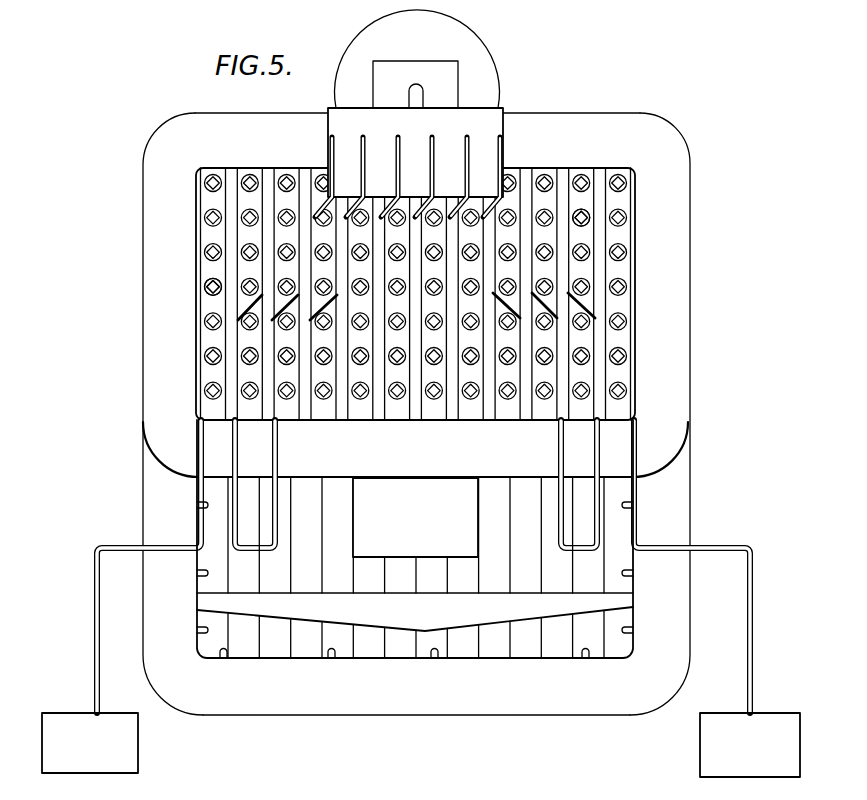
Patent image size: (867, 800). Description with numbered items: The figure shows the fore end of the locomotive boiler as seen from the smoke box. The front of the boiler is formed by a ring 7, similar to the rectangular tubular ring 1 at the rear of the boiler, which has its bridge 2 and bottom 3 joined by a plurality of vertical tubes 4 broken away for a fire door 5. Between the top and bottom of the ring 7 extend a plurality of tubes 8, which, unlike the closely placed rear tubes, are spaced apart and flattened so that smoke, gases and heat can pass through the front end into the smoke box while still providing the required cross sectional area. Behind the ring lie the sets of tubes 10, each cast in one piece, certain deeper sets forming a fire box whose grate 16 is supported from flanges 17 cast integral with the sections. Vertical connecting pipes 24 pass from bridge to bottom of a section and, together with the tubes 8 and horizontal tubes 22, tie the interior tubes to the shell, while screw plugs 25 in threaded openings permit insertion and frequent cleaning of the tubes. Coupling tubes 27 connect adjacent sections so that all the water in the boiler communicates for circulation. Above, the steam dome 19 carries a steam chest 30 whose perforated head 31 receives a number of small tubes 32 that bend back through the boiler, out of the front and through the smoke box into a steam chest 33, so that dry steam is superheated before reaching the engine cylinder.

The tubular ring 1 is at (150, 498).
The bridge 2 is at (282, 118).
The bottom 3 is at (228, 704).
The vertical tubes 4 is at (620, 505).
The fire door 5 is at (415, 517).
The ring 7 is at (152, 387).
The tubes 8 is at (255, 200).
The sets of tubes 10 is at (395, 344).
The grate 16 is at (416, 620).
The flanges 17 is at (634, 605).
The steam dome 19 is at (417, 59).
The horizontal tube 22 is at (631, 578).
The vertical connecting pipes 24 is at (617, 236).
The screw plugs 25 is at (203, 288).
The coupling tubes 27 is at (632, 630).
The steam chest 30 is at (412, 83).
The head 31 is at (470, 127).
The small tubes 32 is at (467, 143).
The steam chest 33 is at (102, 763).